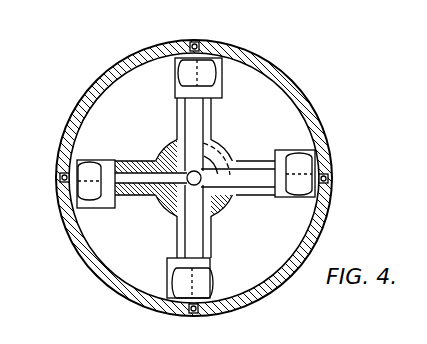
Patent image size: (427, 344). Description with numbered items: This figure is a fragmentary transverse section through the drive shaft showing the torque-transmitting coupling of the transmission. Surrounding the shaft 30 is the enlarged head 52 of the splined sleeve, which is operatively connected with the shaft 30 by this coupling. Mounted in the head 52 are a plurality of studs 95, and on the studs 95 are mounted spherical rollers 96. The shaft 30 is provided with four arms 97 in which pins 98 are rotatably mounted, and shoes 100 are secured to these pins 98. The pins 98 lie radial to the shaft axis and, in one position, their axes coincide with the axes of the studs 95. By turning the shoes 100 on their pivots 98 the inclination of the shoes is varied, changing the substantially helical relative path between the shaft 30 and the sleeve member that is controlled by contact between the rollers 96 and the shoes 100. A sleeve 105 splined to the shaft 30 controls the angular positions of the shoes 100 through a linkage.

The shaft 30 is at (167, 207).
The enlarged head 52 is at (285, 85).
The studs 95 is at (60, 177).
The spherical rollers 96 is at (184, 72).
The arms 97 is at (189, 110).
The pins 98 is at (122, 172).
The shoes 100 is at (218, 81).
The sleeve 105 is at (219, 143).